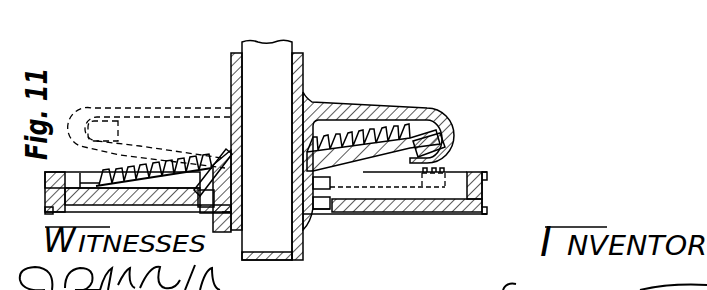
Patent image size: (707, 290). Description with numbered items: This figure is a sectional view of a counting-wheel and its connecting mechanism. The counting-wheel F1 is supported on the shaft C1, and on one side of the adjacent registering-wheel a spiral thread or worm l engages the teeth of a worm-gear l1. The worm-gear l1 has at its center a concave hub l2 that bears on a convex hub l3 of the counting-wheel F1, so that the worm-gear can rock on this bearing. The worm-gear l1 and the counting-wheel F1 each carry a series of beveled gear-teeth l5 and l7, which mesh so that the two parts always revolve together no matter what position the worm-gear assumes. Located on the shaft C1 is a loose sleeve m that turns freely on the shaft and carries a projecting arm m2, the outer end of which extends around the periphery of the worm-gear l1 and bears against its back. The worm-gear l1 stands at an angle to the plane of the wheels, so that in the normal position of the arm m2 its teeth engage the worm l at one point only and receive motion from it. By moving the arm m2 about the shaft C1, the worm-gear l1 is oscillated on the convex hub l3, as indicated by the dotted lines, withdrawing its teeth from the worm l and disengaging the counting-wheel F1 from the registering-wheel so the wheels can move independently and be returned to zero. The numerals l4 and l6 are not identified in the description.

The shaft C1 is at (264, 150).
The loose sleeve m is at (232, 54).
The projecting arm m2 is at (388, 110).
The worm-gear l1 is at (368, 170).
The nuts l4 is at (343, 210).
The counting-wheel F1 is at (440, 207).
The concave hub l2 is at (224, 153).
The convex hub l3 is at (484, 190).
The beveled gear-teeth l7 is at (488, 172).
The beveled gear-teeth l5 is at (490, 208).
The lug l6 is at (229, 218).
The spiral thread or worm l is at (316, 214).